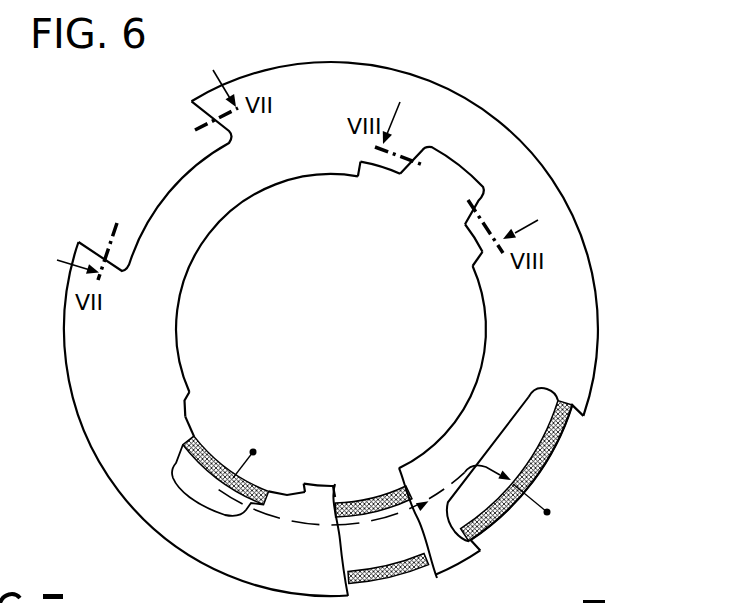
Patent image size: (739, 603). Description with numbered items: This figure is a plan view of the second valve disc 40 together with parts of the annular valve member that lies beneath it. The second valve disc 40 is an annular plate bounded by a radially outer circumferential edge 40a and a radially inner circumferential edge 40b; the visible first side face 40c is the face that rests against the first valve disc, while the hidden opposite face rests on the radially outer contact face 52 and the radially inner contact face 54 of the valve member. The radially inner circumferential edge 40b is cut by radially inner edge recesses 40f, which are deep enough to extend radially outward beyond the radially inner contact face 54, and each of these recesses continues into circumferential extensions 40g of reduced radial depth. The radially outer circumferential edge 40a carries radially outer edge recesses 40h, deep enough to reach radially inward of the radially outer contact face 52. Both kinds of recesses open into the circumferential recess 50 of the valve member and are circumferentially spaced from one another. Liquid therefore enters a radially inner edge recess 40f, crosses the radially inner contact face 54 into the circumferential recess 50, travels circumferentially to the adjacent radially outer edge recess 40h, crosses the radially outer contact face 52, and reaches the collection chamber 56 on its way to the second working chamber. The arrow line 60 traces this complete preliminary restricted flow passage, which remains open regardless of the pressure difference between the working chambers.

The second valve disc 40 is at (362, 329).
The radially outer circumferential edge 40a is at (557, 190).
The radially inner circumferential edge 40b is at (483, 343).
The first side face 40c is at (503, 147).
The radially inner edge recesses 40f is at (440, 173).
The circumferential extensions 40g is at (367, 177).
The radially outer edge recesses 40h is at (165, 180).
The circumferential recess 50 is at (372, 547).
The radially outer contact face 52 is at (493, 528).
The radially inner contact face 54 is at (237, 498).
The collection chamber 56 is at (604, 484).
The arrow line 60 is at (478, 458).